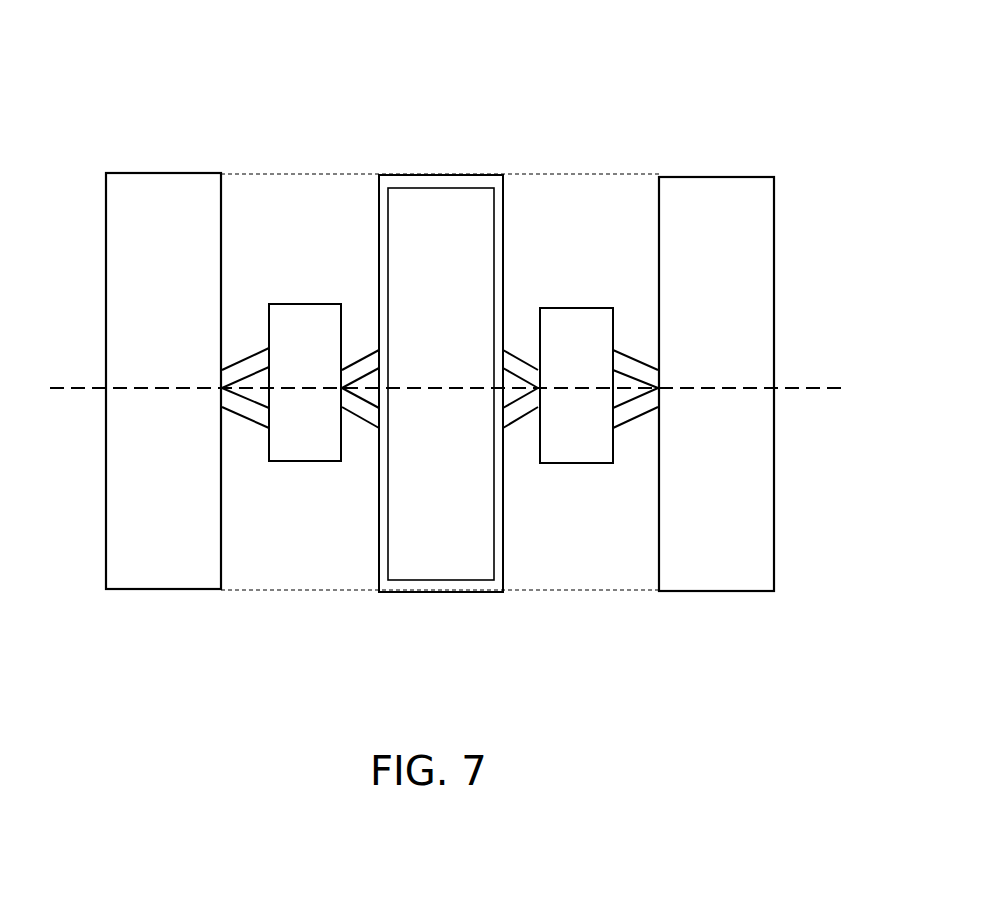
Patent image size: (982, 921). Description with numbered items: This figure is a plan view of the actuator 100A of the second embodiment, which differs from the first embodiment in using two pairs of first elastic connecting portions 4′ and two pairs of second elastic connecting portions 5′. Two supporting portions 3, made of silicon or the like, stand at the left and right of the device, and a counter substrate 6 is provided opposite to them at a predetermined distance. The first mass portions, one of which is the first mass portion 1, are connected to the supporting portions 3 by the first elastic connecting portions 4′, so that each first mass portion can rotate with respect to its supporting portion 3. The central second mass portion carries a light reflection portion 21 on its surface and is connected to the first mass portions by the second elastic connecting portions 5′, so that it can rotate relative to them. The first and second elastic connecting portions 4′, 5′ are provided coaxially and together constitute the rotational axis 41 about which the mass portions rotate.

The actuator 100A is at (740, 77).
The supporting portion 3 is at (124, 338).
The rotational axis 41 is at (465, 395).
The light reflection portion 21 is at (440, 562).
The counter substrate 6 is at (275, 578).
The second elastic connecting portions 5′ is at (366, 370).
The first elastic connecting portions 4′ is at (255, 370).
The first mass portion 1 is at (577, 325).